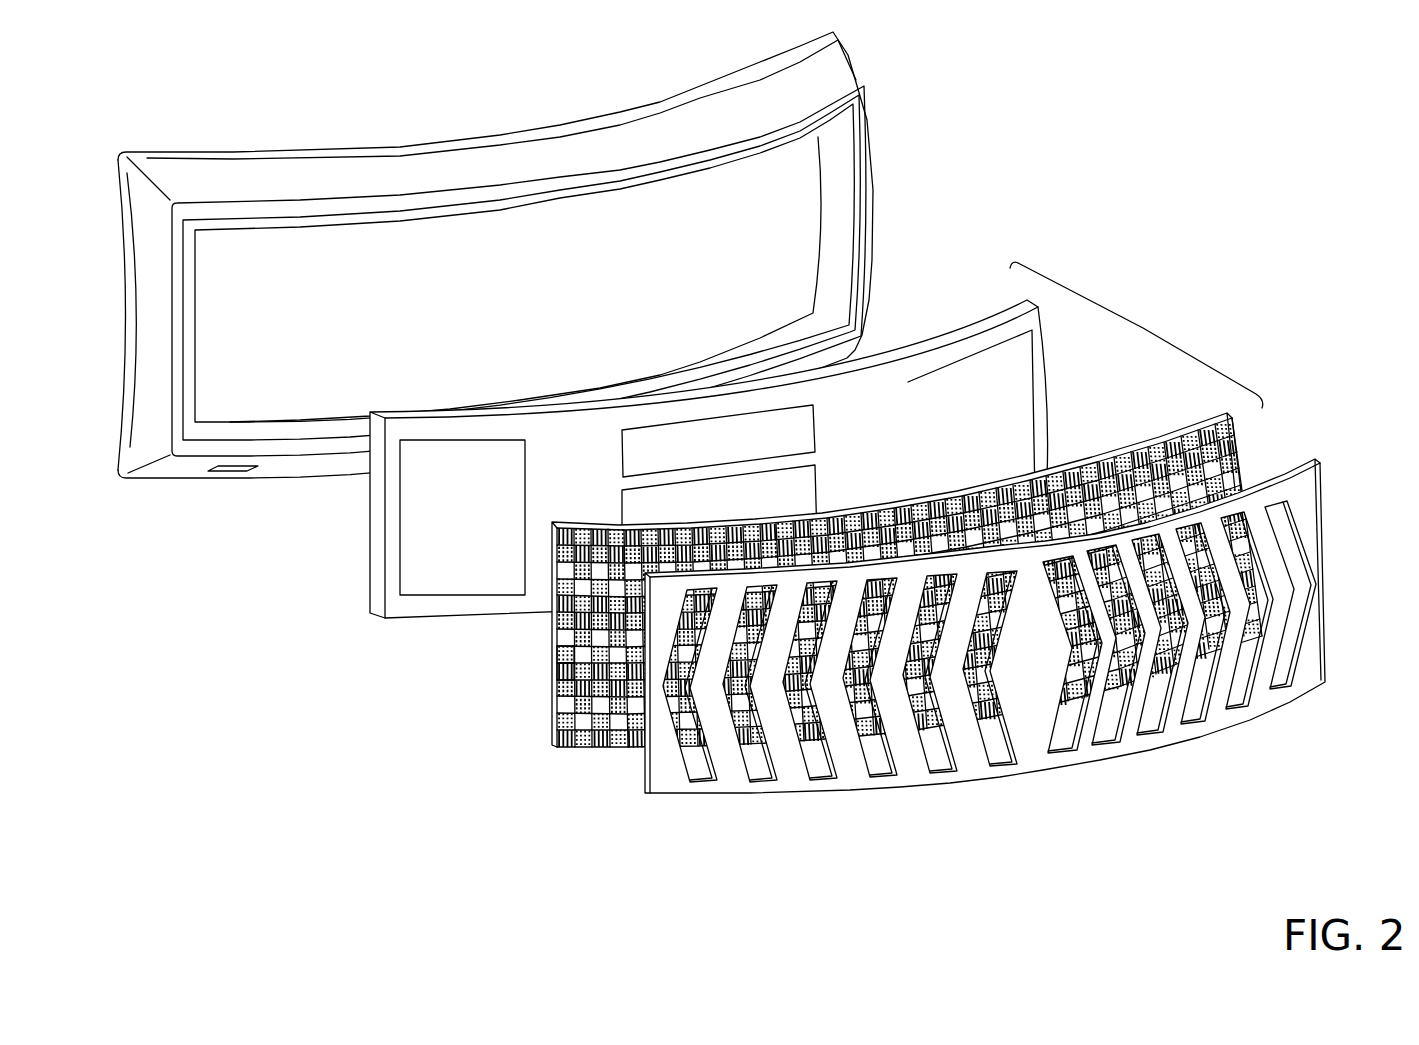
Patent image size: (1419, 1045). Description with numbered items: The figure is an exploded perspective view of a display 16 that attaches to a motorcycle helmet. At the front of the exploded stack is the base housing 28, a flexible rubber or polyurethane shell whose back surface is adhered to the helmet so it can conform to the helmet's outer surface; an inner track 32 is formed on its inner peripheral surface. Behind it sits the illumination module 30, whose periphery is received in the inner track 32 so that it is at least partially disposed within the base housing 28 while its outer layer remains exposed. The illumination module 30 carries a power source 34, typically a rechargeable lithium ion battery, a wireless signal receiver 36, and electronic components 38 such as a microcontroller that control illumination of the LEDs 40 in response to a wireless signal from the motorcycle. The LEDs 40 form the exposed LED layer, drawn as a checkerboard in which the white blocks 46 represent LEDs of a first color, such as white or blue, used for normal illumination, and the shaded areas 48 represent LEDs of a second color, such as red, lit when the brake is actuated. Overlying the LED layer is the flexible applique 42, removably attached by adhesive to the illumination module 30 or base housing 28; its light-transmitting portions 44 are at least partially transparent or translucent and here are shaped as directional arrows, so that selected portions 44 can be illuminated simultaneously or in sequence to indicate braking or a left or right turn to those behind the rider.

The display 16 is at (1178, 120).
The base housing 28 is at (513, 163).
The illumination module 30 is at (1145, 326).
The inner track 32 is at (837, 197).
The power source 34 is at (1013, 392).
The wireless signal receiver 36 is at (427, 578).
The electronic components 38 is at (806, 430).
The LEDs 40 is at (582, 697).
The flexible applique 42 is at (667, 777).
The light-transmitting portions 44 is at (1290, 538).
The white blocks 46 is at (563, 680).
The shaded areas 48 is at (560, 663).